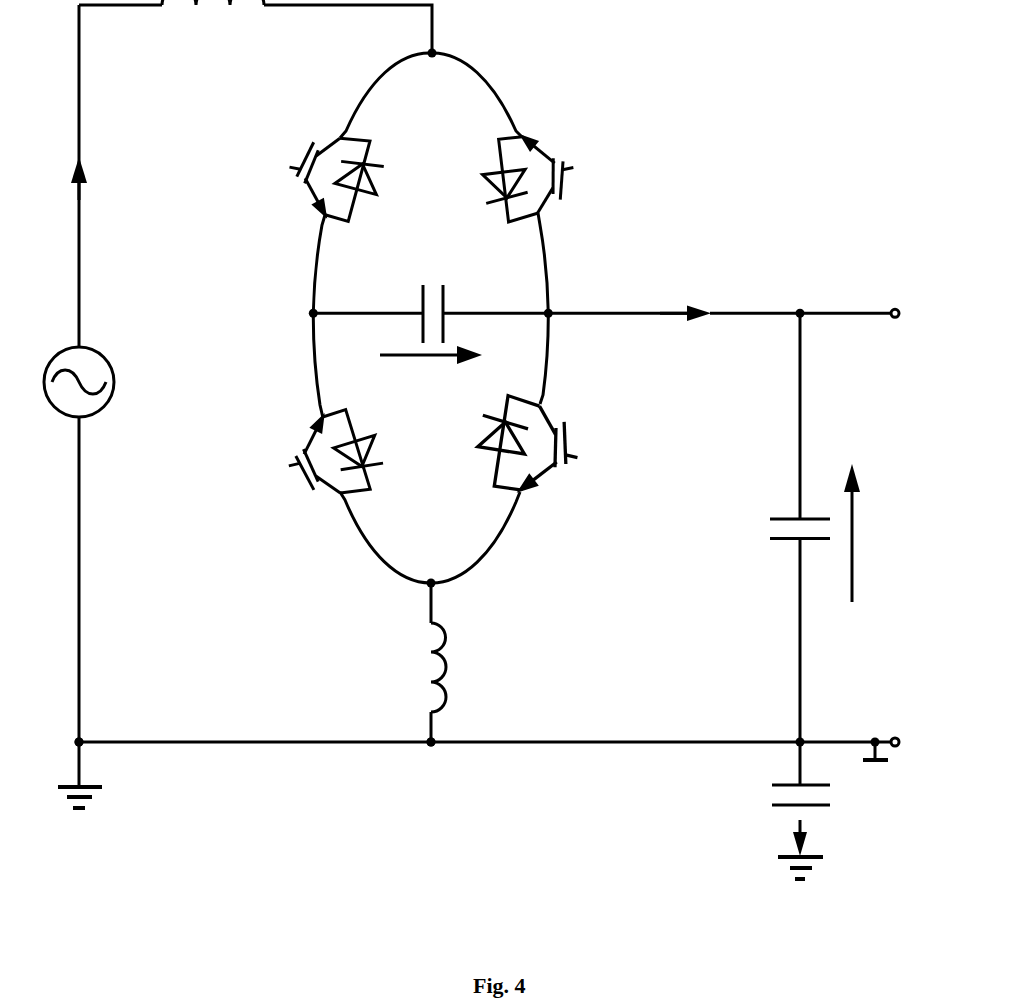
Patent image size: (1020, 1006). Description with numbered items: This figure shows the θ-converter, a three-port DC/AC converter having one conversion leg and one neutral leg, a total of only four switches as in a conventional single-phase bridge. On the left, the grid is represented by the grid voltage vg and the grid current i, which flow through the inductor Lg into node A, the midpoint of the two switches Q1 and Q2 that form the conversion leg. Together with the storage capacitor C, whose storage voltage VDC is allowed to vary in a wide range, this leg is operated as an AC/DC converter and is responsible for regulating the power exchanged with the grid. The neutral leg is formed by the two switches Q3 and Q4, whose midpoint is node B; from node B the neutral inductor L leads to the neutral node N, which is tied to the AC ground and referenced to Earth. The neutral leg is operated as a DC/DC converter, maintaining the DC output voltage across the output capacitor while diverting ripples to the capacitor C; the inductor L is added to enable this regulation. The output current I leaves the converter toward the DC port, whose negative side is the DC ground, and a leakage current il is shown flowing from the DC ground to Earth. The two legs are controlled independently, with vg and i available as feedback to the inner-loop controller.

The inductor Lg is at (213, 38).
The grid current i is at (98, 174).
The grid voltage vg is at (106, 382).
The node A is at (431, 78).
The node B is at (432, 560).
The neutral node N is at (429, 768).
The switch Q1 is at (552, 175).
The switch Q2 is at (312, 176).
The switch Q3 is at (547, 447).
The switch Q4 is at (312, 455).
The storage capacitor C is at (406, 299).
The storage voltage VDC is at (431, 376).
The output current I is at (685, 290).
The neutral inductor L is at (458, 667).
The AC ground AC is at (147, 690).
The earth Earth is at (128, 777).
The DC ground DC is at (889, 799).
The leakage current il is at (754, 812).